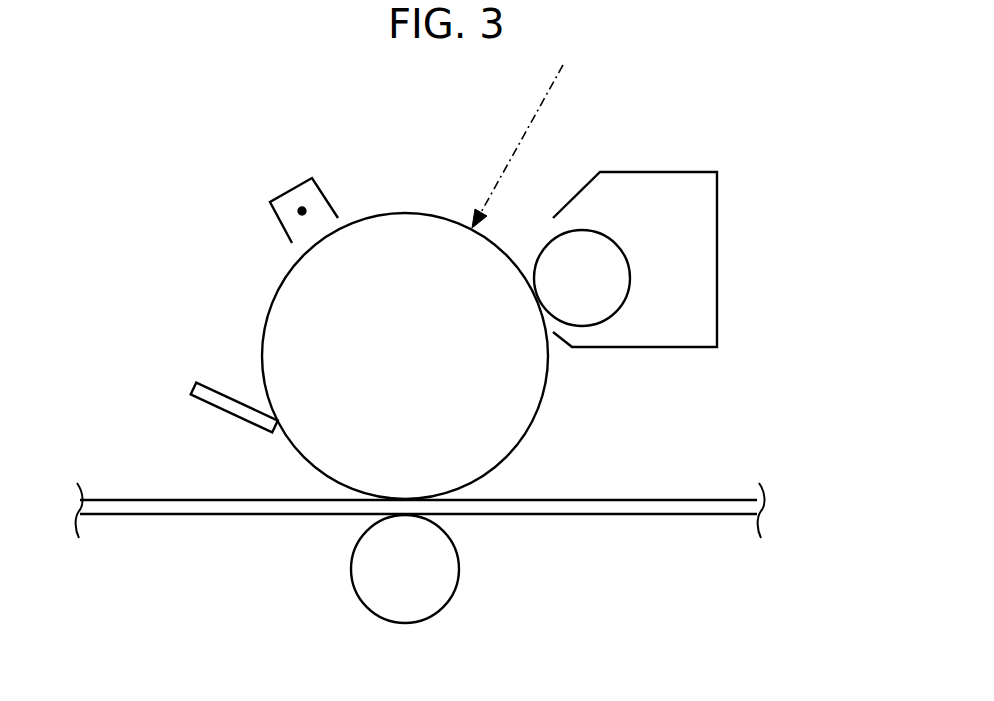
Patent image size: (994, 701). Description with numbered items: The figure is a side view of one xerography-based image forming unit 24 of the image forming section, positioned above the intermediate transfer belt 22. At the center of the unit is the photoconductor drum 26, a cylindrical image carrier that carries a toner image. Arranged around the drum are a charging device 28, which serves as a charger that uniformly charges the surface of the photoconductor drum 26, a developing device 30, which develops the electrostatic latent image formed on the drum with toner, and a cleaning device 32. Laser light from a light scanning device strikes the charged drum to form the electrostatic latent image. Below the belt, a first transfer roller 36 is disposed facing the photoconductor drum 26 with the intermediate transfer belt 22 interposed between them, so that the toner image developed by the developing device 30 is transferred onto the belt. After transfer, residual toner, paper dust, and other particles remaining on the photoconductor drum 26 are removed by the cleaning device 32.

The intermediate transfer belt 22 is at (215, 515).
The image forming unit 24 is at (618, 133).
The photoconductor drum 26 is at (520, 413).
The charging device 28 is at (293, 188).
The developing device 30 is at (717, 237).
The cleaning device 32 is at (222, 390).
The first transfer roller 36 is at (405, 613).